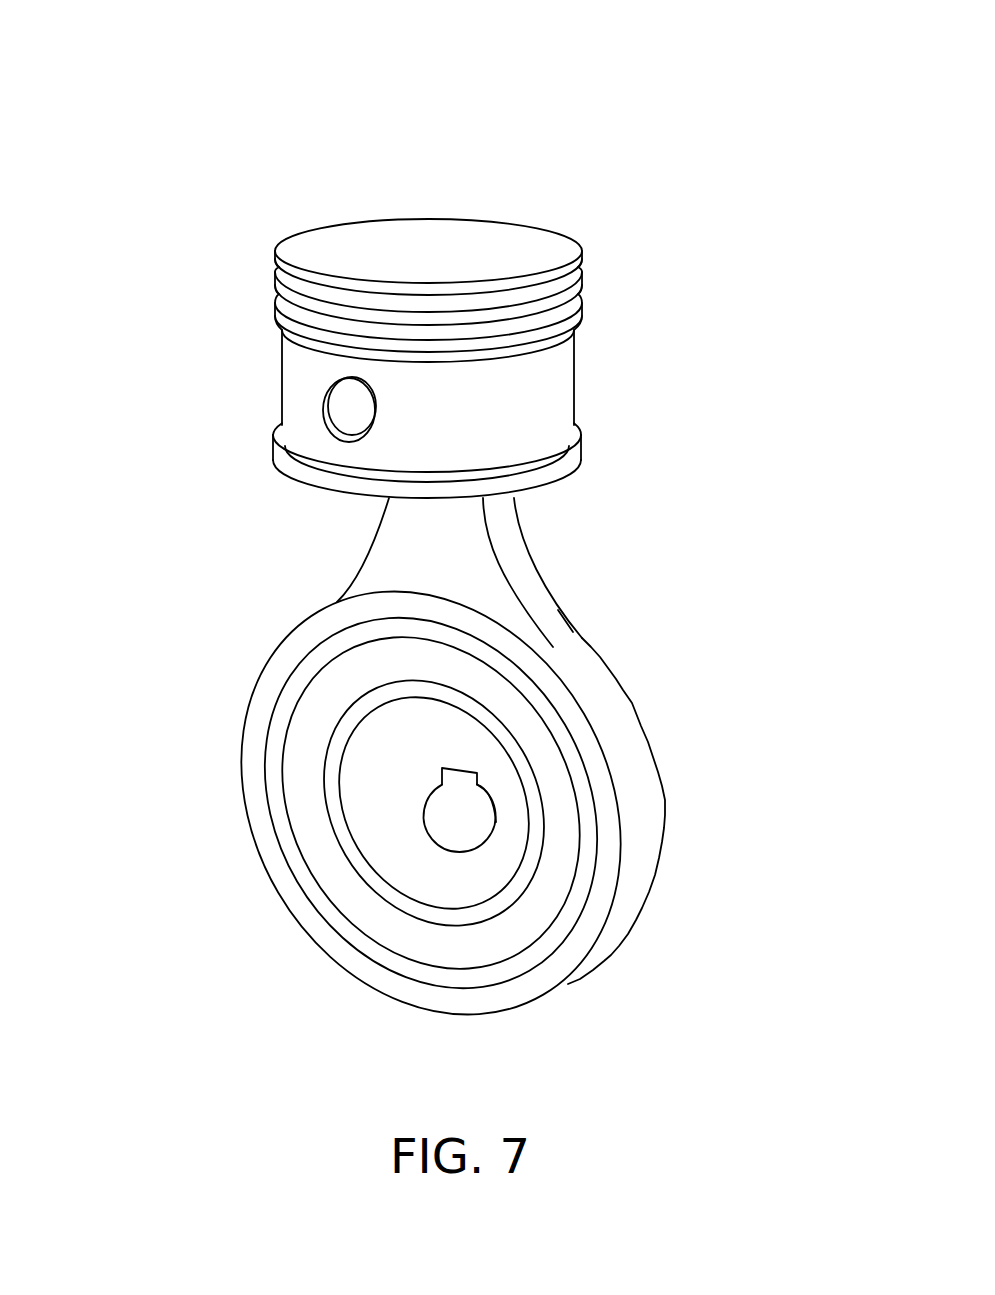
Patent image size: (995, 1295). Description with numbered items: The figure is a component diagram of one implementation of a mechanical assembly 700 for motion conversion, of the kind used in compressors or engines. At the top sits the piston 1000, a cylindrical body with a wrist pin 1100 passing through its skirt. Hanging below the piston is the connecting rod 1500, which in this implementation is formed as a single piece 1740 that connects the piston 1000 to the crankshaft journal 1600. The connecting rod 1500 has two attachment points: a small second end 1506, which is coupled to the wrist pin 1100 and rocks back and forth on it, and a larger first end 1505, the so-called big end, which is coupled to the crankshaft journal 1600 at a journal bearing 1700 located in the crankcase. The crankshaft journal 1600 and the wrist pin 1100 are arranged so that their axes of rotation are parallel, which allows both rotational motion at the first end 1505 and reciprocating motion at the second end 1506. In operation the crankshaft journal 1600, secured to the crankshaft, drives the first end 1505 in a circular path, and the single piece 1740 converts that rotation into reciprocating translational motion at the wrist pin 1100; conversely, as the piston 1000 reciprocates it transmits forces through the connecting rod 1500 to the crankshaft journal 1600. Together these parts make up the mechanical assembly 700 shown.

The mechanical assembly 700 is at (270, 88).
The piston 1000 is at (452, 240).
The wrist pin 1100 is at (355, 415).
The single piece 1740 is at (608, 193).
The connecting rod 1500 is at (575, 563).
The second end 1506 is at (386, 527).
The first end 1505 is at (668, 785).
The journal bearing 1700 is at (328, 707).
The crankshaft journal 1600 is at (428, 828).